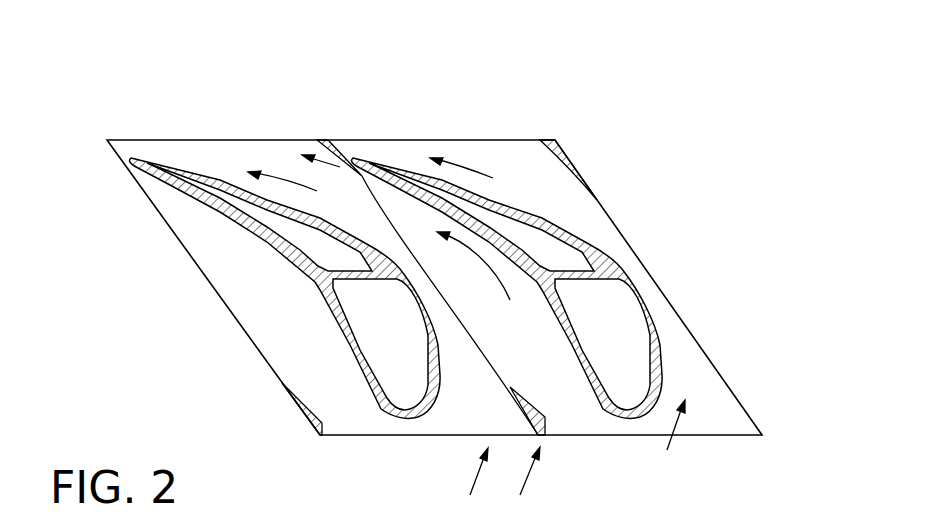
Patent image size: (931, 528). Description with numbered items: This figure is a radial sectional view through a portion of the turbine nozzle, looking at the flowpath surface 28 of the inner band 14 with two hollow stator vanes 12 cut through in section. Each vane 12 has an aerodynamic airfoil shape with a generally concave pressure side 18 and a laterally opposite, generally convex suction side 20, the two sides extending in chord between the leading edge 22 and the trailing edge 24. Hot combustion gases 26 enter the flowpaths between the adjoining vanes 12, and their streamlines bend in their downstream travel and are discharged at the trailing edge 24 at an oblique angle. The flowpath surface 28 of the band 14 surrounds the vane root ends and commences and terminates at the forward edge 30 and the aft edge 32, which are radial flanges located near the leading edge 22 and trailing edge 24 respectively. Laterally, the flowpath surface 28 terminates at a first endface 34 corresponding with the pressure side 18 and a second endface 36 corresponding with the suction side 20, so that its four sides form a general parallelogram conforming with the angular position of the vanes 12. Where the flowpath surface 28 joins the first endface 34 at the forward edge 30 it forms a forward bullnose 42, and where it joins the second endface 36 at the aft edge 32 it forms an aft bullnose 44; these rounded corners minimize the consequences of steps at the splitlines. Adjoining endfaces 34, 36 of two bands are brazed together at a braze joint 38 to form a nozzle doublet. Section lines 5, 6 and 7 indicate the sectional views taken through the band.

The stator vane 12 is at (586, 229).
The inner band 14 is at (216, 309).
The pressure side 18 is at (332, 312).
The suction side 20 is at (433, 316).
The leading edge 22 is at (622, 418).
The trailing edge 24 is at (354, 158).
The combustion gases 26 is at (524, 486).
The flowpath surface 28 is at (226, 270).
The forward edge 30 is at (458, 435).
The aft edge 32 is at (230, 139).
The first endface 34 is at (181, 245).
The second endface 36 is at (648, 267).
The braze joint 38 is at (327, 138).
The forward bullnose 42 is at (300, 403).
The aft bullnose 44 is at (326, 139).
The section line 5- 5 is at (510, 418).
The section line 6- 6 is at (68, 113).
The section line 7- 7 is at (583, 148).